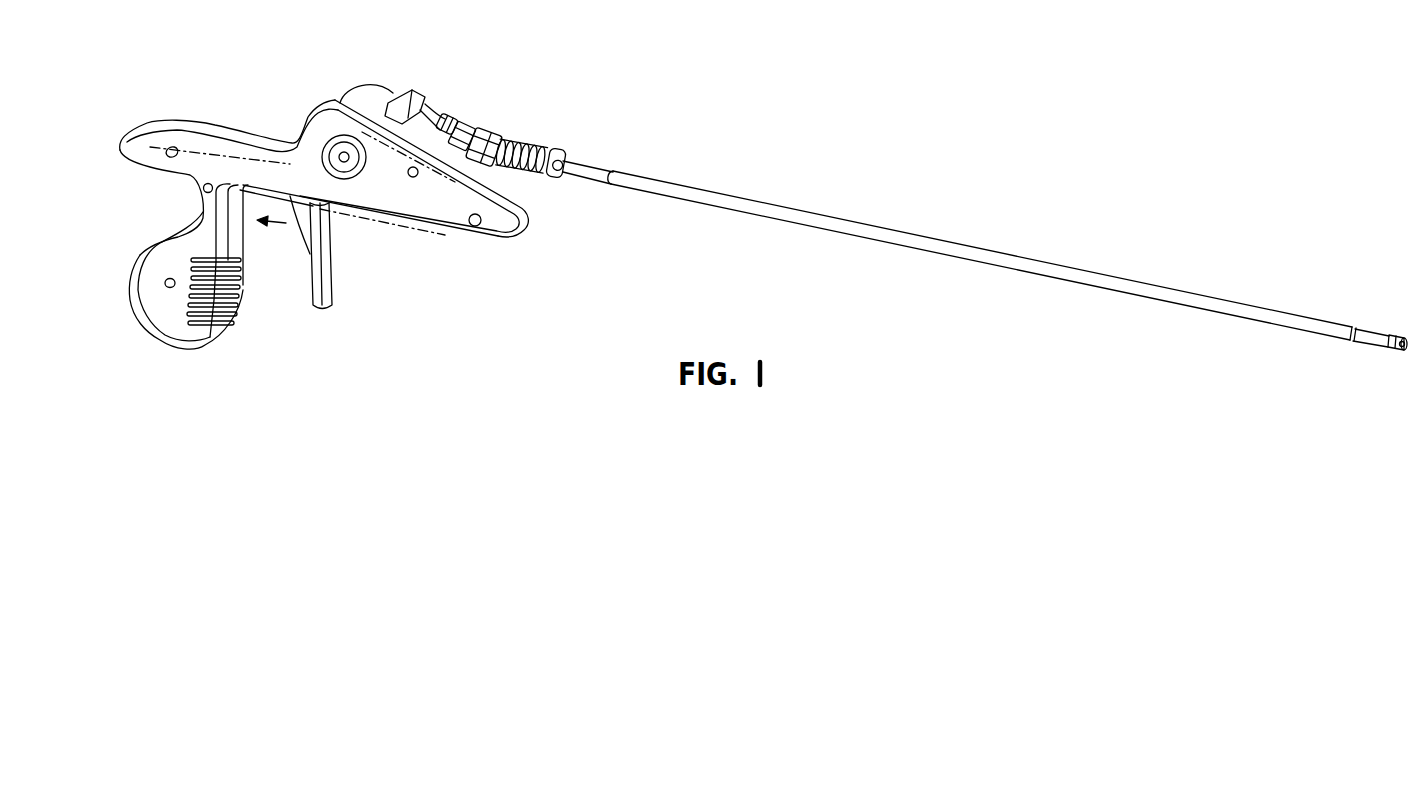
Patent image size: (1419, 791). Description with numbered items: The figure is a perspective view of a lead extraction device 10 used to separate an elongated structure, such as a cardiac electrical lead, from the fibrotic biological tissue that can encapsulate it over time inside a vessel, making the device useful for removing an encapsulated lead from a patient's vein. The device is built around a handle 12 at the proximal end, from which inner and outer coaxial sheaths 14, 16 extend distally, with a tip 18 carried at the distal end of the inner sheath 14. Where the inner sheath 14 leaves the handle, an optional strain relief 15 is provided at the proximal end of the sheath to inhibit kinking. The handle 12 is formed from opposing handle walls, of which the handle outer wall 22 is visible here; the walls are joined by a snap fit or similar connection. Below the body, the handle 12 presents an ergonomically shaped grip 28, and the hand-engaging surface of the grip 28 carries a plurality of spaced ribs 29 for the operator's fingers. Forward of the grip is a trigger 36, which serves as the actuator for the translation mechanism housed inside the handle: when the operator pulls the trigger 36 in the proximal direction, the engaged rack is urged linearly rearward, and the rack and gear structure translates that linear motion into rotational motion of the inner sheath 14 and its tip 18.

The lead extraction device 10 is at (751, 206).
The handle 12 is at (144, 245).
The inner sheath 14 is at (1375, 330).
The strain relief 15 is at (524, 138).
The outer sheath 16 is at (1176, 287).
The tip 18 is at (1402, 352).
The handle outer wall 22 is at (385, 196).
The ergonomic grip 28 is at (125, 275).
The ribs 29 is at (239, 307).
The trigger 36 is at (324, 270).